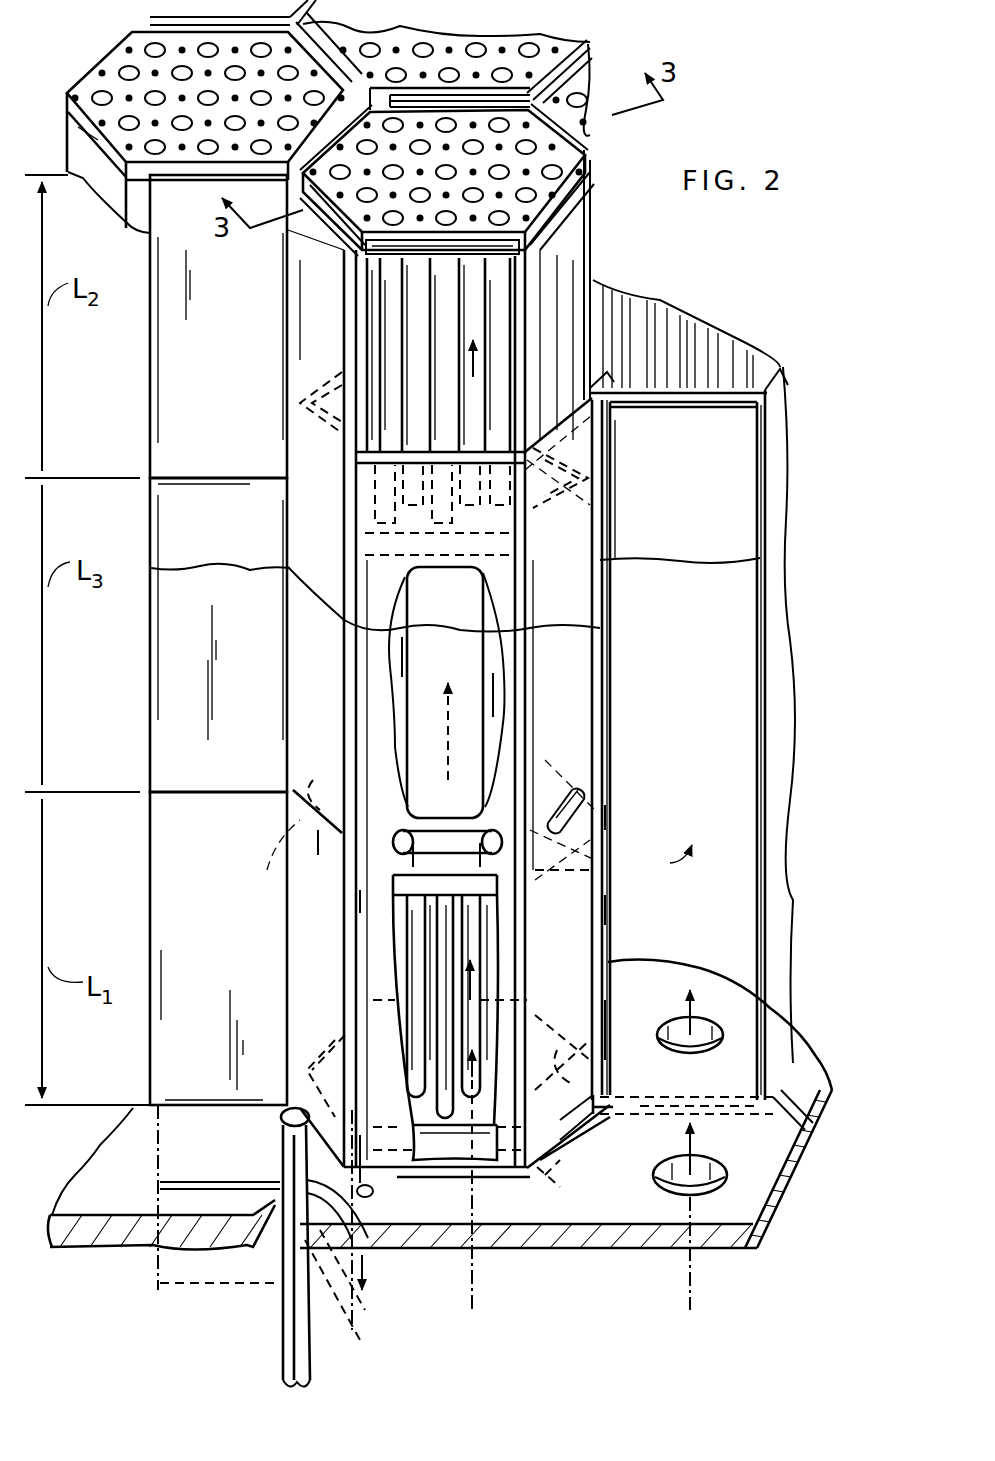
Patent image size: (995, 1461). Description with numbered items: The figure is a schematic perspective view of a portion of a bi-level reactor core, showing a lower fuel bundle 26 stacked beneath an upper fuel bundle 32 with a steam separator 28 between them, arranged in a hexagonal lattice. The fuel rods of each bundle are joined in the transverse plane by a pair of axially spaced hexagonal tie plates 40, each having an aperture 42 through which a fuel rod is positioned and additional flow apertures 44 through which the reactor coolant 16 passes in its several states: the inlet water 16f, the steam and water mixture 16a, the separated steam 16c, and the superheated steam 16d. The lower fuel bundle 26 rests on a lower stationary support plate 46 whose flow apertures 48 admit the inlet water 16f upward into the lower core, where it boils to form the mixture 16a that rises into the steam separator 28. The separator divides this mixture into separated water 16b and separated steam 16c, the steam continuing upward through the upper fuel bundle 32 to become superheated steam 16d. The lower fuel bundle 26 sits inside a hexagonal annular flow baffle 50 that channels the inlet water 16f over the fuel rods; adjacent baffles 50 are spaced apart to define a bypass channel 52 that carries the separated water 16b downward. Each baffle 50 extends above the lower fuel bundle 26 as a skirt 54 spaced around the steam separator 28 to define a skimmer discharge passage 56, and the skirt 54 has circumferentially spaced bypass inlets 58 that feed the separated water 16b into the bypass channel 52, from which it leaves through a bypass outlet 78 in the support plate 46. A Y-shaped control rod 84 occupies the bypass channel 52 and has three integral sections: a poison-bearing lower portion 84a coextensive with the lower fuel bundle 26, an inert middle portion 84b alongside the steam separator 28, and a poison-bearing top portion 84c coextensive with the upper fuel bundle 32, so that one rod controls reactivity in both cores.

The reactor coolant 16 is at (686, 556).
The steam and water mixture 16a is at (450, 725).
The separated water 16b is at (495, 695).
The separated steam 16c is at (473, 377).
The superheated steam 16d is at (316, 531).
The inlet water 16f is at (478, 1288).
The lower fuel bundle 26 is at (565, 960).
The steam separator 28 is at (455, 600).
The upper fuel bundle 32 is at (563, 241).
The tie plate 40 is at (578, 190).
The aperture 42 is at (583, 153).
The flow aperture 44 is at (549, 47).
The lower stationary support plate 46 is at (790, 1196).
The flow aperture 48 is at (660, 1168).
The annular flow baffle 50 is at (603, 867).
The bypass channel 52 is at (600, 628).
The skirt 54 is at (608, 625).
The skimmer discharge passage 56 is at (403, 703).
The bypass inlet 58 is at (590, 787).
The bypass outlet 78 is at (373, 1197).
The control rod 84 is at (172, 640).
The lower portion 84a is at (150, 930).
The middle portion 84b is at (150, 665).
The top portion 84c is at (150, 319).